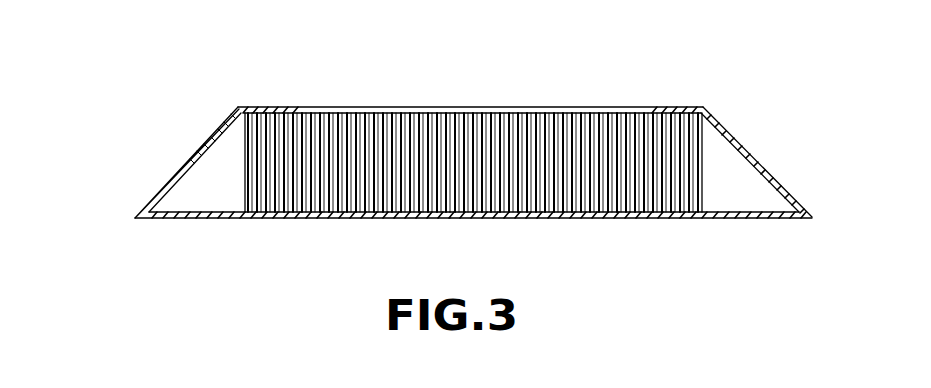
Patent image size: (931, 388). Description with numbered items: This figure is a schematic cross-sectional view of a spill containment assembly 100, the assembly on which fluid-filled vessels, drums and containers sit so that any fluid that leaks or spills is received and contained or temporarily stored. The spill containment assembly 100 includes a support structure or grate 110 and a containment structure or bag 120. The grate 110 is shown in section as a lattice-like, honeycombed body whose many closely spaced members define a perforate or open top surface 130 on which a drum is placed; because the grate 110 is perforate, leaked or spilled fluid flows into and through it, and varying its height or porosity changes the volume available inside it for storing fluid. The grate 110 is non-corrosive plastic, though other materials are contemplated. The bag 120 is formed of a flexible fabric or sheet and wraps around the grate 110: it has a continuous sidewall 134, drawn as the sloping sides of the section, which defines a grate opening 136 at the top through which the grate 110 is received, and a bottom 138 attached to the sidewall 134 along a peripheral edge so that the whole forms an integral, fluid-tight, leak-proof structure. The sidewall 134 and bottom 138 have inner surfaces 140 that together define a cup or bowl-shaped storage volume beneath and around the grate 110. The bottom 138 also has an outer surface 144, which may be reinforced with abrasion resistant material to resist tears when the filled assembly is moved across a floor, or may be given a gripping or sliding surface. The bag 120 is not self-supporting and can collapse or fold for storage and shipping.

The spill containment assembly 100 is at (145, 125).
The grate 110 is at (244, 173).
The bag 120 is at (672, 106).
The open top surface 130 is at (568, 107).
The sidewall 134 is at (196, 152).
The grate opening 136 is at (307, 108).
The bottom 138 is at (287, 218).
The inner surfaces 140 is at (213, 158).
The bottom outer surface 144 is at (595, 218).